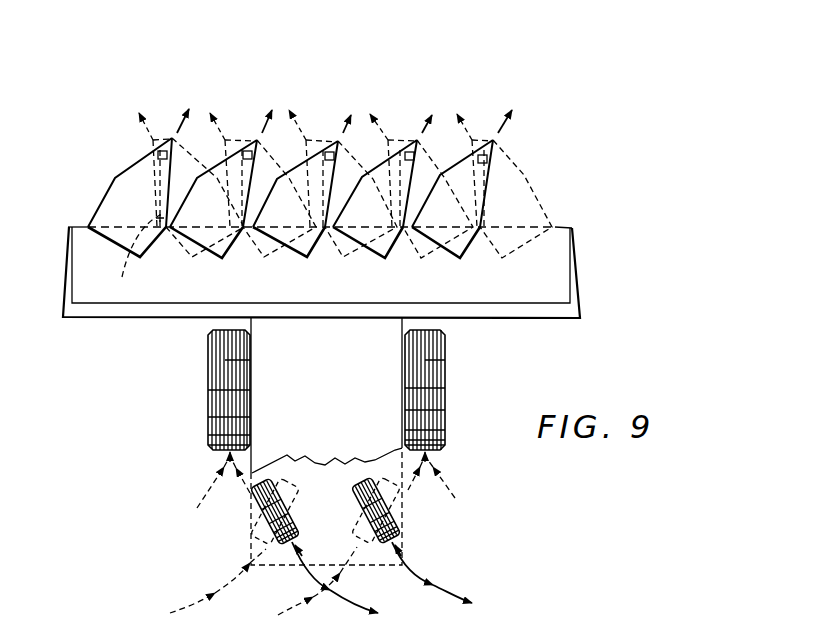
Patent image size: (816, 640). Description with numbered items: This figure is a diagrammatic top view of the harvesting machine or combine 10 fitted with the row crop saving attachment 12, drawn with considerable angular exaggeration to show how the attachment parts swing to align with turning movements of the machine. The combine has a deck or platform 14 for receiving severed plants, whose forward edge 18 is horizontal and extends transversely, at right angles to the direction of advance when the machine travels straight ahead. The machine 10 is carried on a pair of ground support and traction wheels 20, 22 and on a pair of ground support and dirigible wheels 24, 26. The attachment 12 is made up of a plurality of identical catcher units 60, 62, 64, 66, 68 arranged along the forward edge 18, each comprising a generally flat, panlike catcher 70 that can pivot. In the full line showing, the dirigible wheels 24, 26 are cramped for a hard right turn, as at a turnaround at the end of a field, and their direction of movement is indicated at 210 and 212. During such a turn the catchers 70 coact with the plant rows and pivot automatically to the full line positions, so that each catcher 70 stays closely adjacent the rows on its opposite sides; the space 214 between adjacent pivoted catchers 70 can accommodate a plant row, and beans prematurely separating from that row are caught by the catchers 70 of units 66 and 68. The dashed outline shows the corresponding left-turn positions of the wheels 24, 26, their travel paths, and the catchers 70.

The harvesting machine or combine 10 is at (584, 283).
The row crop saving attachment 12 is at (520, 147).
The deck or platform 14 is at (87, 250).
The forward edge of platform 18 is at (559, 227).
The ground support and traction wheel 20 is at (212, 392).
The ground support and traction wheel 22 is at (438, 400).
The ground support and dirigible wheel 24 is at (260, 507).
The ground support and dirigible wheel 26 is at (360, 495).
The catcher unit 60 is at (491, 124).
The catcher unit 62 is at (403, 121).
The catcher unit 64 is at (329, 121).
The catcher unit 66 is at (241, 119).
The catcher unit 68 is at (164, 109).
The catcher 70 is at (117, 202).
The direction of movement 210 is at (310, 573).
The direction of movement 212 is at (417, 567).
The space 214 is at (136, 256).